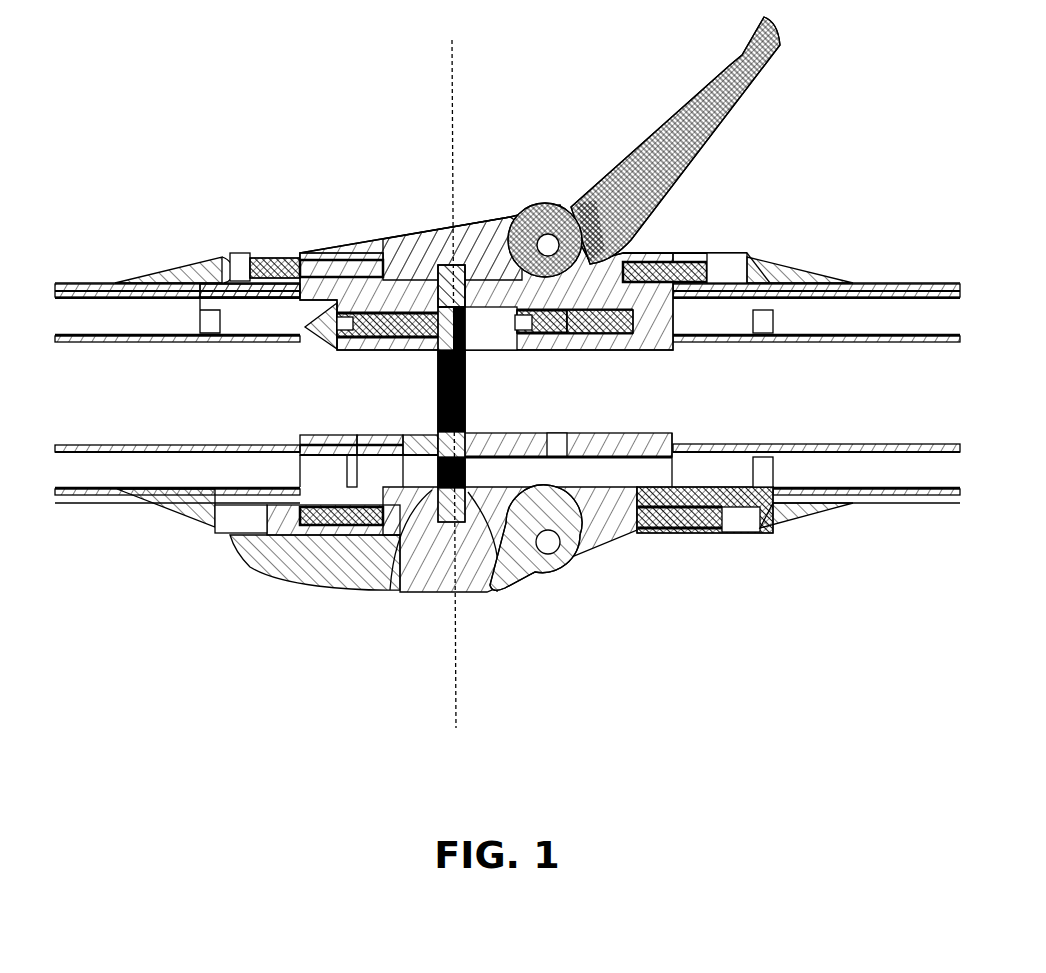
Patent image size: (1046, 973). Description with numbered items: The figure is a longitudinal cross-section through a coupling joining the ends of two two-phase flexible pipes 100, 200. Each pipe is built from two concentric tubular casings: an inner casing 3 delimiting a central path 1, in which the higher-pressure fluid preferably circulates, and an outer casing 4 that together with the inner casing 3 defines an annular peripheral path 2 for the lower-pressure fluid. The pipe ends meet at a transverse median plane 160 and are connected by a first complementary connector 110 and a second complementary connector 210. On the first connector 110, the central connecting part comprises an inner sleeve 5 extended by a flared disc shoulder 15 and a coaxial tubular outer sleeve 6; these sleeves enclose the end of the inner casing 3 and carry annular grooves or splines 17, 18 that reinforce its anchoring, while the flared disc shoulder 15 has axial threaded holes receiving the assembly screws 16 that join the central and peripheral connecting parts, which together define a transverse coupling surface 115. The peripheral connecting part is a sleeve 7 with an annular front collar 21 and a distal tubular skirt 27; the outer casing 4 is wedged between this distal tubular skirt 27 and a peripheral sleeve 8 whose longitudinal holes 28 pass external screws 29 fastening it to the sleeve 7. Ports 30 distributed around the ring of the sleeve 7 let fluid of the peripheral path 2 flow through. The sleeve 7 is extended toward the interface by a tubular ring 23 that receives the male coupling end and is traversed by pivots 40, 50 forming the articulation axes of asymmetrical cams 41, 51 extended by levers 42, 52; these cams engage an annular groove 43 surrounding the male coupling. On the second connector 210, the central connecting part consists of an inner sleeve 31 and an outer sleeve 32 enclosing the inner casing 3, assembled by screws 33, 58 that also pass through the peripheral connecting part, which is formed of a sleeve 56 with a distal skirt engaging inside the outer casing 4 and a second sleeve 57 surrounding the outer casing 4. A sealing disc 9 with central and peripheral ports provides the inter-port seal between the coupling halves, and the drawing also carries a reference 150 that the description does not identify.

The central path 1 is at (175, 401).
The peripheral path 2 is at (135, 327).
The inner casing 3 is at (95, 443).
The outer casing 4 is at (97, 487).
The inner sleeve 5 is at (343, 352).
The coaxial tubular outer sleeve 6 is at (243, 280).
The sleeve 7 is at (300, 586).
The peripheral sleeve 8 is at (128, 280).
The sealing disc 9 is at (470, 397).
The flared disc shoulder 15 is at (410, 338).
The assembly screws 16 is at (400, 298).
The annular grooves or splines 17 is at (300, 440).
The annular grooves or splines 18 is at (363, 440).
The annular front collar 21 is at (418, 256).
The tubular ring 23 is at (499, 592).
The distal tubular skirt 27 is at (178, 280).
The longitudinal holes 28 is at (213, 270).
The external screws 29 is at (325, 258).
The ports 30 is at (390, 590).
The inner sleeve 31 is at (600, 353).
The outer sleeve 32 is at (690, 325).
The screws 33 is at (548, 345).
The pivot 40 is at (521, 208).
The asymmetrical cam 41 is at (570, 198).
The lever 42 is at (693, 122).
The annular groove 43 is at (625, 350).
The pivot 50 is at (552, 547).
The asymmetrical cam 51 is at (612, 550).
The lever 52 is at (258, 568).
The sleeve 56 is at (663, 533).
The second sleeve 57 is at (813, 512).
The screws 58 is at (737, 533).
The two-phase flexible pipe 100 is at (130, 665).
The first complementary connector 110 is at (325, 170).
The transverse coupling surface 115 is at (437, 330).
The centre axis region 150 is at (527, 140).
The transverse median plane 160 is at (452, 397).
The two-phase flexible pipe 200 is at (918, 632).
The second complementary connector 210 is at (770, 197).